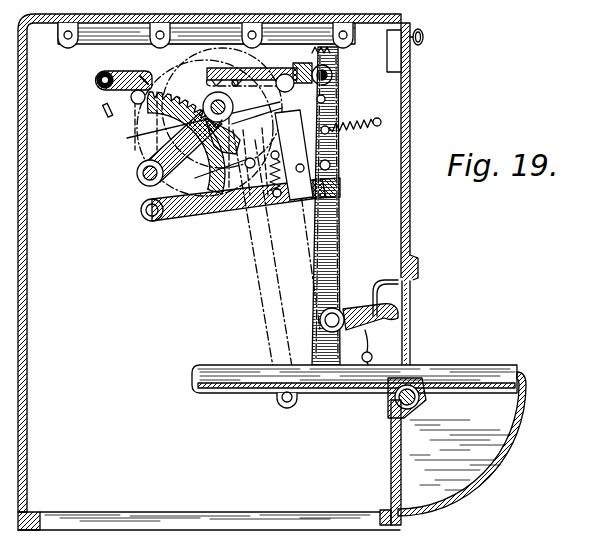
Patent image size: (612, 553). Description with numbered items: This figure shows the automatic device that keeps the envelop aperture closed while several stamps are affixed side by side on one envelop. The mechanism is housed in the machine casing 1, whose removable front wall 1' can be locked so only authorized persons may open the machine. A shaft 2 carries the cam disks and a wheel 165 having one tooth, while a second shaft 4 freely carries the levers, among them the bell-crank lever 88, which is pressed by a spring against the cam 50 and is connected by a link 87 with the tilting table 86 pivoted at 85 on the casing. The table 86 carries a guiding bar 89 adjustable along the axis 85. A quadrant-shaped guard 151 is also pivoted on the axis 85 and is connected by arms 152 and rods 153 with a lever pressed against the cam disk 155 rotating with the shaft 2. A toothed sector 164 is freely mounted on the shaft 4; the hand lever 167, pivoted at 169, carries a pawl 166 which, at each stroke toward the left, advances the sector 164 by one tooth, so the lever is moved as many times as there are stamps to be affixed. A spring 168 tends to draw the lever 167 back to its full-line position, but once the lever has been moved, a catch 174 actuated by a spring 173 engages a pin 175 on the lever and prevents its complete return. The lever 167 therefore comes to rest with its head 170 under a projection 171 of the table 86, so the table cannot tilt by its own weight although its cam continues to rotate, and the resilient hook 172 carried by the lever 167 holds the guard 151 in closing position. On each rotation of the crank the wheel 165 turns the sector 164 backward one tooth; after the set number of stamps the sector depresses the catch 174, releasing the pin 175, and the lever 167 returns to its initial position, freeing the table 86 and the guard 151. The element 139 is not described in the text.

The machine casing 1 is at (209, 272).
The front wall of the casing 1' is at (404, 199).
The shaft 2 is at (208, 110).
The shaft 4 is at (137, 173).
The cam 50 is at (141, 209).
The tilting axis 85 is at (396, 414).
The tilting table 86 is at (248, 390).
The link 87 is at (262, 266).
The bell-crank lever 88 is at (132, 112).
The guiding bar 89 is at (230, 356).
The hub 139 is at (139, 72).
The guard 151 is at (500, 470).
The arms 152 is at (392, 373).
The rods 153 is at (346, 269).
The cam disk 155 is at (170, 72).
The toothed sector 164 is at (192, 140).
The wheel 165 is at (233, 107).
The pawl 166 is at (216, 72).
The lever 167 is at (327, 98).
The spring 168 is at (372, 118).
The pivot 169 is at (320, 320).
The head 170 is at (336, 400).
The projection 171 is at (368, 386).
The hook 172 is at (400, 311).
The spring 173 is at (277, 198).
The catch 174 is at (198, 212).
The pin 175 is at (331, 165).